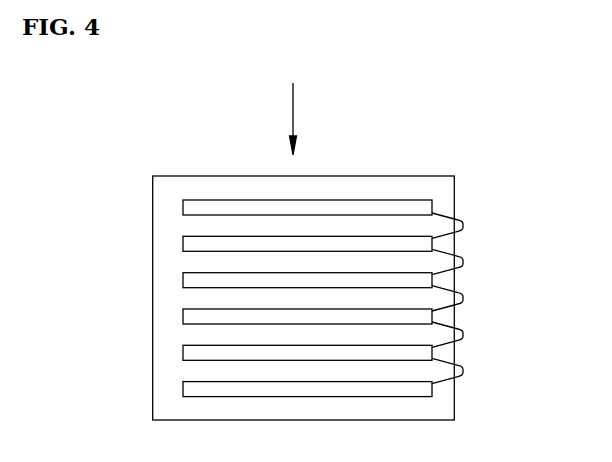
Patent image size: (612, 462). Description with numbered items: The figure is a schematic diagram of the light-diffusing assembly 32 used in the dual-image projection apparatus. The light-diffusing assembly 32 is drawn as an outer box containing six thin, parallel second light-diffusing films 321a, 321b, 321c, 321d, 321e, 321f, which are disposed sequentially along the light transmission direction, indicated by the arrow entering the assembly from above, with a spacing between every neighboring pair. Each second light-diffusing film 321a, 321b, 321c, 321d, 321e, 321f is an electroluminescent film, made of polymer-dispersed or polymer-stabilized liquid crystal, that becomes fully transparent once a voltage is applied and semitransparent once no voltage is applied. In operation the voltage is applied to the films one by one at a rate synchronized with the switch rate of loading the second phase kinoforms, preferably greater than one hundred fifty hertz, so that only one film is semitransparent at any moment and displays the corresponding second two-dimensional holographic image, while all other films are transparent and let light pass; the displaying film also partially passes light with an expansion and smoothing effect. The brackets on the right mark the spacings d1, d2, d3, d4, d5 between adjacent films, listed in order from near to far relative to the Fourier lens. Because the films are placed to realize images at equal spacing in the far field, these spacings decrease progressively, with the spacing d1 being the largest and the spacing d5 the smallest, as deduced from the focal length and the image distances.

The light-diffusing assembly 32 is at (403, 176).
The second light-diffusing film 321a is at (187, 208).
The second light-diffusing film 321b is at (187, 244).
The second light-diffusing film 321c is at (187, 281).
The second light-diffusing film 321d is at (187, 317).
The second light-diffusing film 321e is at (187, 353).
The second light-diffusing film 321f is at (187, 390).
The spacing d1 is at (473, 225).
The spacing d2 is at (473, 261).
The spacing d3 is at (473, 297).
The spacing d4 is at (473, 334).
The spacing d5 is at (473, 370).